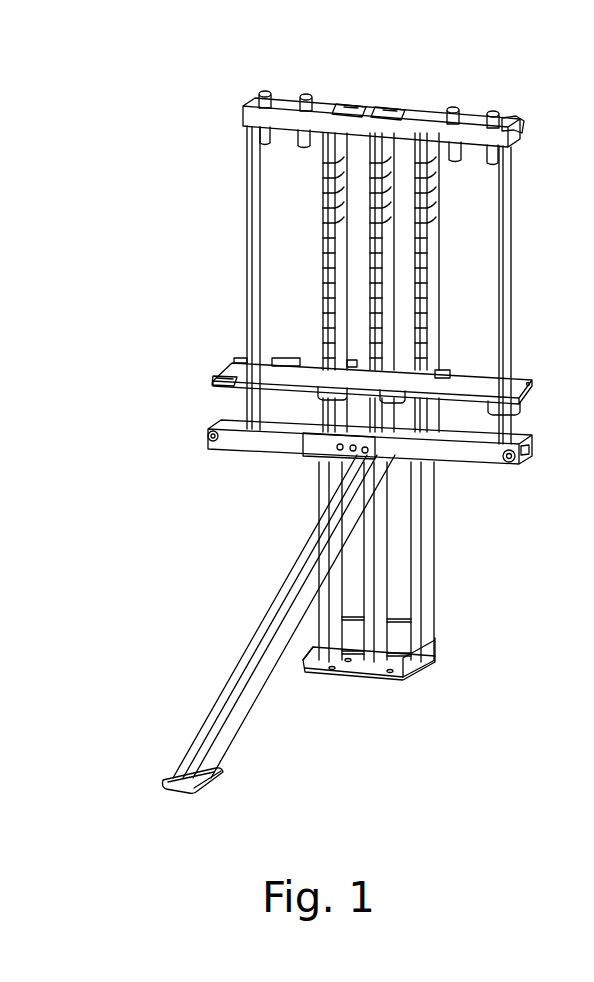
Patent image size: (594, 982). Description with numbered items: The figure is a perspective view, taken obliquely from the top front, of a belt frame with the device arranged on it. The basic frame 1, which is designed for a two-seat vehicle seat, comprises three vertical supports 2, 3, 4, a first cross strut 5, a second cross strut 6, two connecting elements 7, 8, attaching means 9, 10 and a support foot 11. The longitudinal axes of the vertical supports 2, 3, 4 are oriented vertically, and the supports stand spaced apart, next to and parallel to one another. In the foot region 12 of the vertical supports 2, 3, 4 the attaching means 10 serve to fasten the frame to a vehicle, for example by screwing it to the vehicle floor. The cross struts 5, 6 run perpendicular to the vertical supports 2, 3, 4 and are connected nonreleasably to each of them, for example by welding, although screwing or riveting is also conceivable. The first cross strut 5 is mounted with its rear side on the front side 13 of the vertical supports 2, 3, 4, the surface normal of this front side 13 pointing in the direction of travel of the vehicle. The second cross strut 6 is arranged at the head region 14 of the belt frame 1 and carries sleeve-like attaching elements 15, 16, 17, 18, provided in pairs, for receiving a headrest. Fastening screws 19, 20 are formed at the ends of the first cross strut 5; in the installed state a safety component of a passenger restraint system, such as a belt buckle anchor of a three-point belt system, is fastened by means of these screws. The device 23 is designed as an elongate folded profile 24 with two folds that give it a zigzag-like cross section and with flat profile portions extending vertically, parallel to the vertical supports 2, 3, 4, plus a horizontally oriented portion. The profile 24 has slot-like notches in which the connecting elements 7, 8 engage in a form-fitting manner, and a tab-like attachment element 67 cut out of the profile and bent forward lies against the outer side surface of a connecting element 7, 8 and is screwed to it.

The basic frame 1 is at (137, 788).
The vertical support 2 is at (334, 648).
The vertical support 3 is at (384, 548).
The vertical support 4 is at (426, 588).
The first cross strut 5 is at (473, 458).
The second cross strut 6 is at (506, 128).
The connecting element 7 is at (247, 264).
The connecting element 8 is at (506, 263).
The attaching means 9 is at (214, 779).
The attaching means 10 is at (428, 663).
The support foot 11 is at (223, 707).
The foot region 12 is at (421, 692).
The front side 13 is at (322, 417).
The head region 14 is at (398, 86).
The sleeve-like attaching element 15 is at (498, 114).
The sleeve-like attaching element 16 is at (453, 110).
The sleeve-like attaching element 17 is at (306, 97).
The sleeve-like attaching element 18 is at (265, 94).
The fastening screw 19 is at (515, 444).
The fastening screw 20 is at (211, 447).
The device 23 is at (193, 382).
The folded profile 24 is at (228, 387).
The tab-like attachment element 67 is at (528, 383).